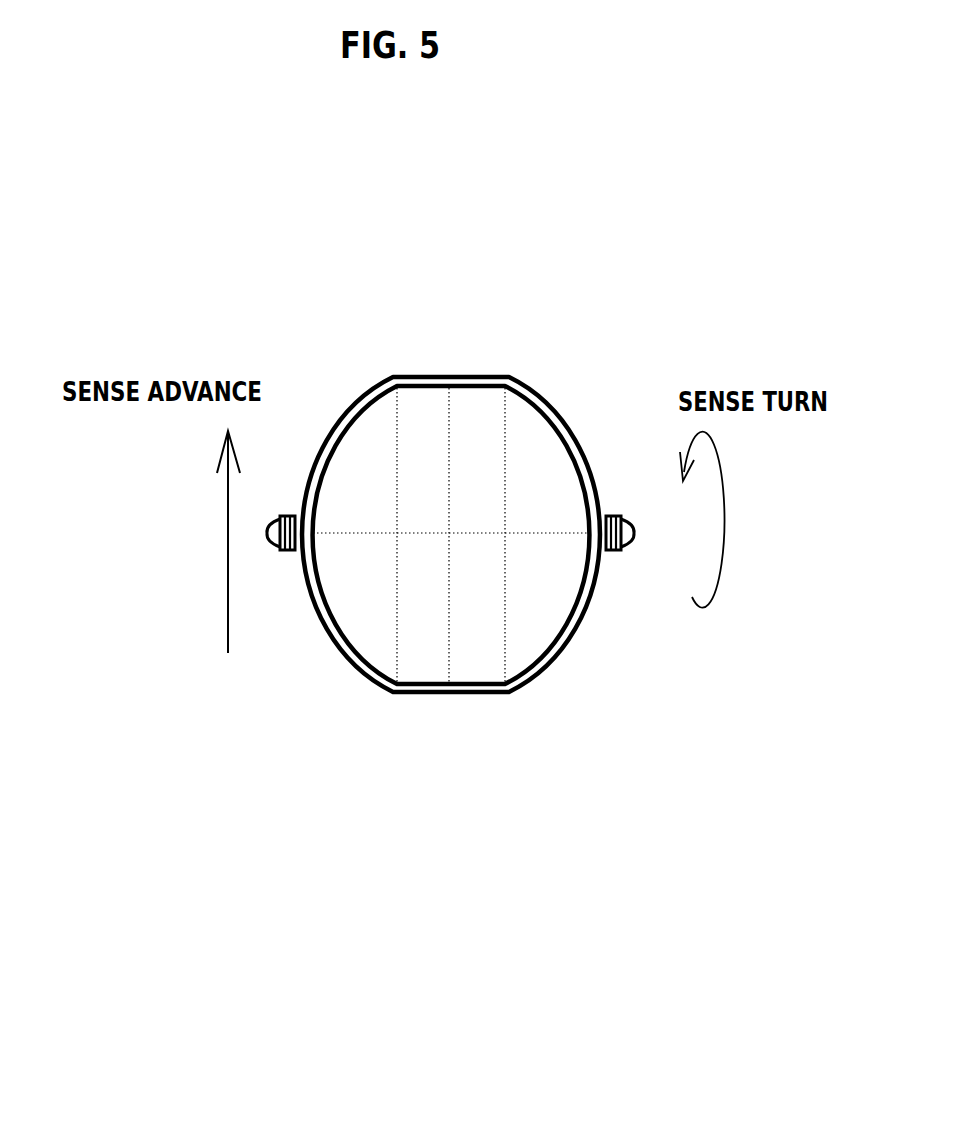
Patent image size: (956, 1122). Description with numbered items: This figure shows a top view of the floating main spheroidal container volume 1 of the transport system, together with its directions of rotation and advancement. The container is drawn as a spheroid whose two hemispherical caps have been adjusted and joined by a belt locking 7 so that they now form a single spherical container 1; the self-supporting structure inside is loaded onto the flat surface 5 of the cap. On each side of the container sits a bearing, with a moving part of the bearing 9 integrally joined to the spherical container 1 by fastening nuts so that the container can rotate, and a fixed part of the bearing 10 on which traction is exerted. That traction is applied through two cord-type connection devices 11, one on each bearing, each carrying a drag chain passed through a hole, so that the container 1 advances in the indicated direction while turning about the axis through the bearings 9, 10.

The floating main spheroidal container volume 1 is at (523, 415).
The flat surface of the cap 5 is at (420, 444).
The belt locking 7 is at (557, 412).
The moving part of the bearing 9 is at (288, 553).
The fixed part of the bearing 10 is at (281, 552).
The cord-type connection device 11 is at (624, 548).